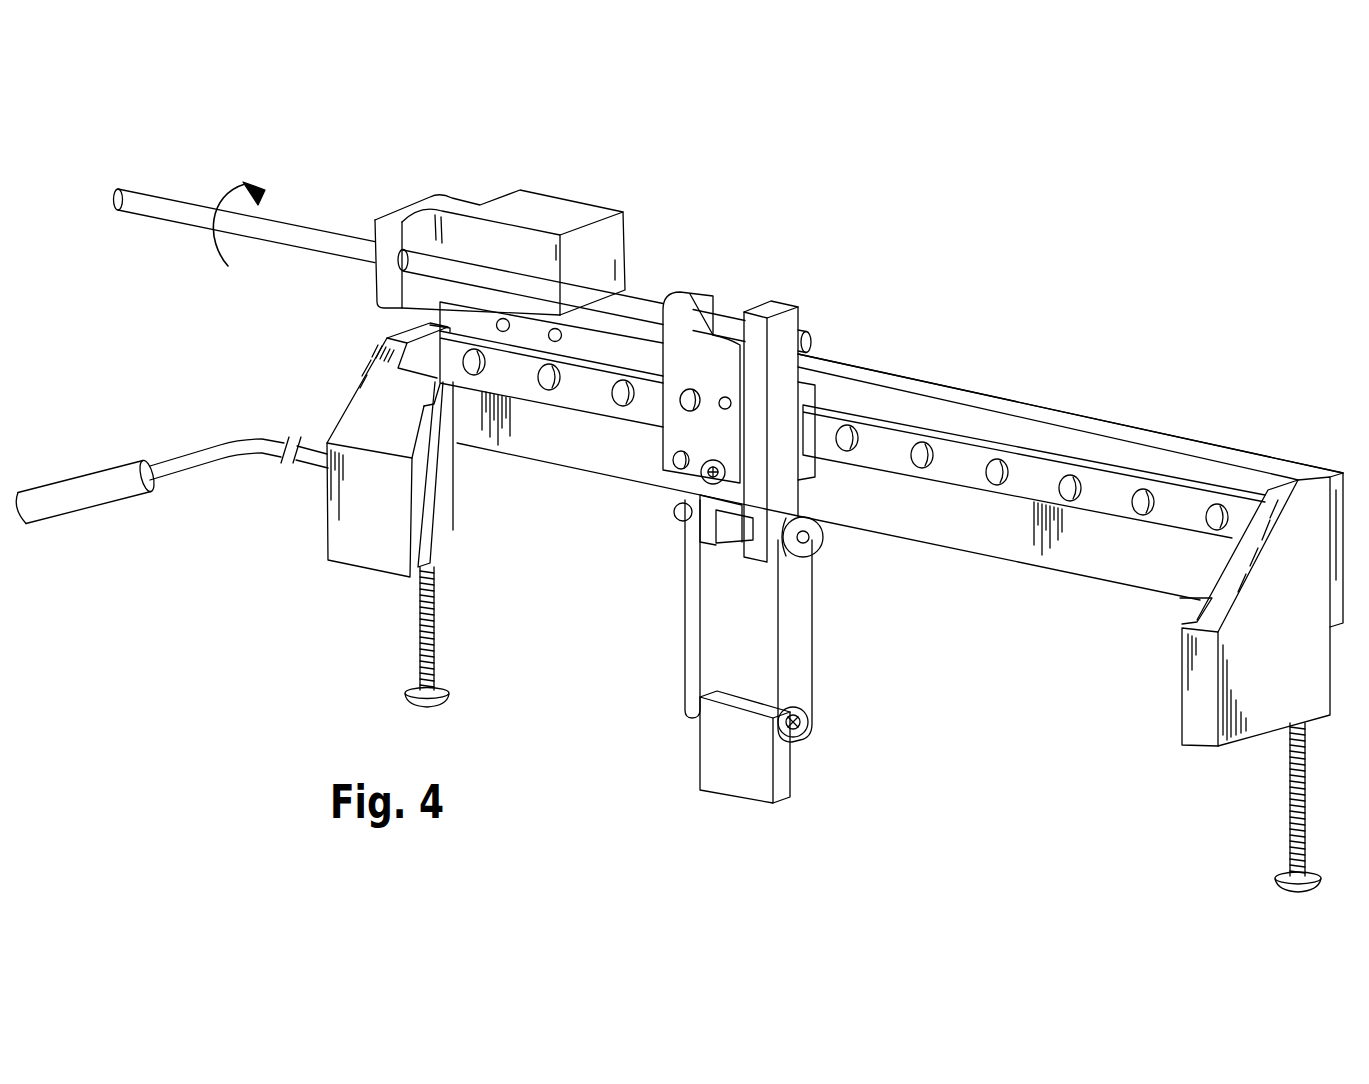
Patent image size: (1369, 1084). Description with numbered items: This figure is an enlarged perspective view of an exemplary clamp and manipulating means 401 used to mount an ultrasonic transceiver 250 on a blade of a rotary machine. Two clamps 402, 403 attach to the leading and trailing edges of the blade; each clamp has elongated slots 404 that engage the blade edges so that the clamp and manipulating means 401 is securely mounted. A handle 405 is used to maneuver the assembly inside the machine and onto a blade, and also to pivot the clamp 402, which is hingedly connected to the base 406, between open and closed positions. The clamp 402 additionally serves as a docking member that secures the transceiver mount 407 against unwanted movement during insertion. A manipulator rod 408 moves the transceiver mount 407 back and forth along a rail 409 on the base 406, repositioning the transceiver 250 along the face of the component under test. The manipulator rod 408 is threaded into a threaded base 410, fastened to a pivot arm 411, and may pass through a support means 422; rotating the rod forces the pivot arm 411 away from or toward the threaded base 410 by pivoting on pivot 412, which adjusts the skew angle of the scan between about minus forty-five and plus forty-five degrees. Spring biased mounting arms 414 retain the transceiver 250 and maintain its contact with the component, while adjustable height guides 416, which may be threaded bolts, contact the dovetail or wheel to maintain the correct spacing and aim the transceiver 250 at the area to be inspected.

The ultrasonic transceiver 250 is at (722, 797).
The clamp and manipulating means 401 is at (901, 183).
The clamp 402 is at (352, 546).
The clamp 403 is at (1266, 722).
The elongated slots 404 is at (432, 514).
The handle 405 is at (103, 490).
The base 406 is at (577, 455).
The transceiver mount 407 is at (746, 300).
The manipulator rod 408 is at (300, 234).
The rail 409 is at (962, 457).
The threaded base 410 is at (684, 300).
The pivot arm 411 is at (795, 380).
The pivot 412 is at (700, 478).
The spring biased mounting arms 414 is at (690, 662).
The height guides 416 is at (426, 705).
The support means 422 is at (570, 226).